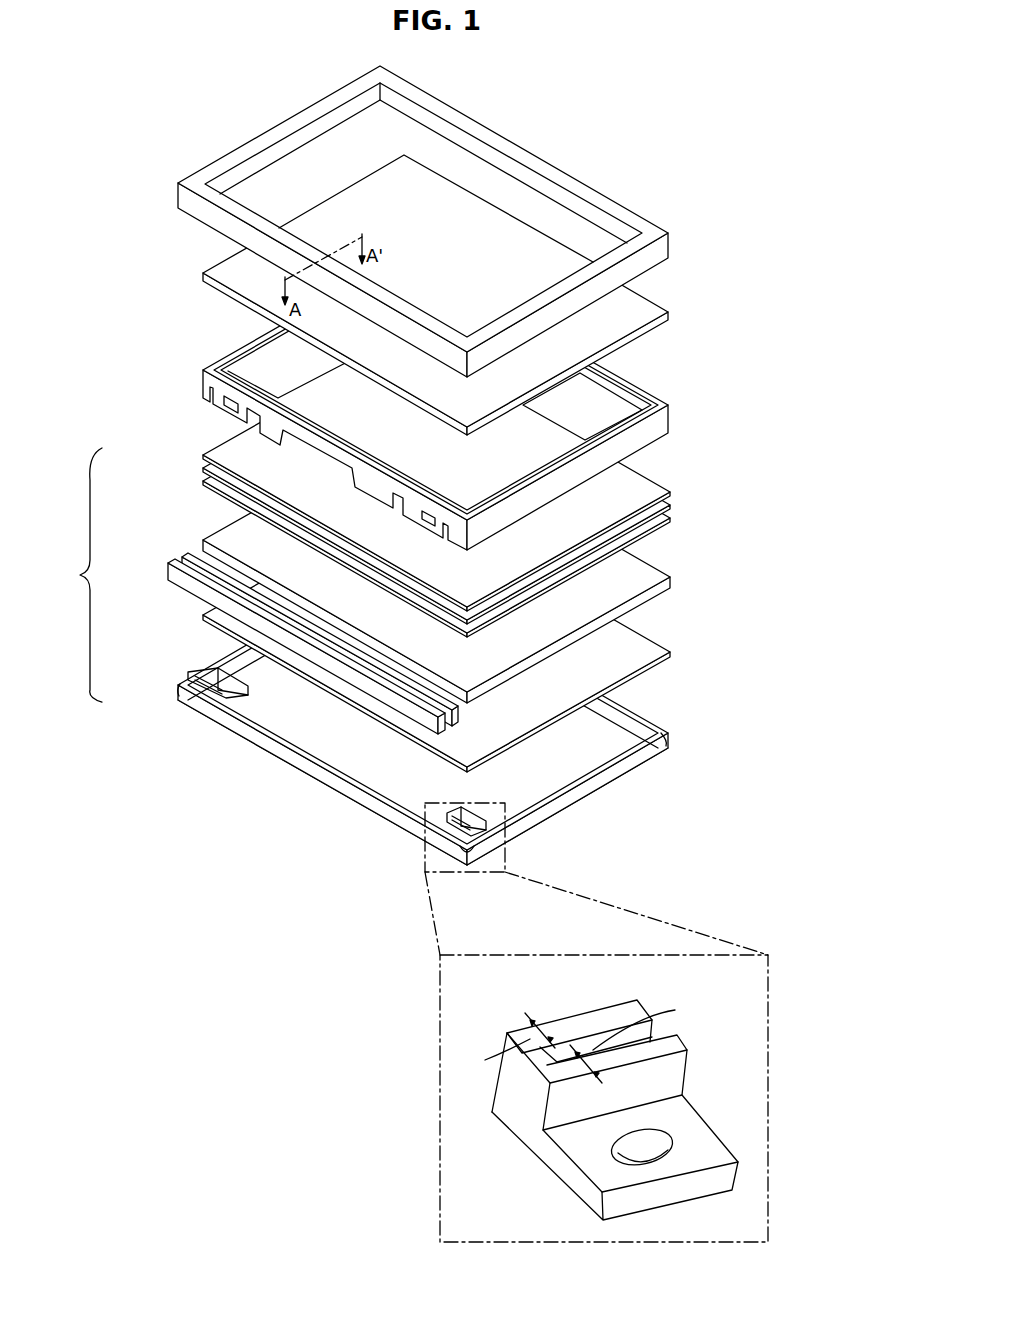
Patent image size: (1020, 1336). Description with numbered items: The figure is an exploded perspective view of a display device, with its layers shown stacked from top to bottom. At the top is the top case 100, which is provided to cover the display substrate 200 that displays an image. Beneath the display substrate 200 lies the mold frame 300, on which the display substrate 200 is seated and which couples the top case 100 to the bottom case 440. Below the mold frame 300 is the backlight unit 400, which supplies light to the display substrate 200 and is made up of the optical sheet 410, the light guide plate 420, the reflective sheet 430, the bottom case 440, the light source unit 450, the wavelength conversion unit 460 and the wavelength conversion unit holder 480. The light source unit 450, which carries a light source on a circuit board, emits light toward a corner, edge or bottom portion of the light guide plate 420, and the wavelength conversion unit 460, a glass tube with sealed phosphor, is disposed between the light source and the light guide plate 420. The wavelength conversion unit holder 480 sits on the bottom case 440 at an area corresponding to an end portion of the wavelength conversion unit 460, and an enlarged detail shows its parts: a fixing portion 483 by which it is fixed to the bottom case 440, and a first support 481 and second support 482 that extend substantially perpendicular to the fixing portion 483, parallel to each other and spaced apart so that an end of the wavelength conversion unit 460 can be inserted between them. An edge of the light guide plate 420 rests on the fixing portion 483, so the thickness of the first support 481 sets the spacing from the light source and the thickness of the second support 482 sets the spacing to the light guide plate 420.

The top case 100 is at (182, 200).
The display substrate 200 is at (203, 277).
The mold frame 300 is at (203, 374).
The backlight unit 400 is at (70, 575).
The optical sheet 410 is at (202, 458).
The light guide plate 420 is at (203, 541).
The reflective sheet 430 is at (203, 617).
The bottom case 440 is at (182, 688).
The light source unit 450 is at (193, 586).
The wavelength conversion unit 460 is at (182, 558).
The wavelength conversion unit holder 480 is at (636, 1098).
The first support 481 is at (593, 1023).
The second support 482 is at (673, 1045).
The fixing portion 483 is at (697, 1142).